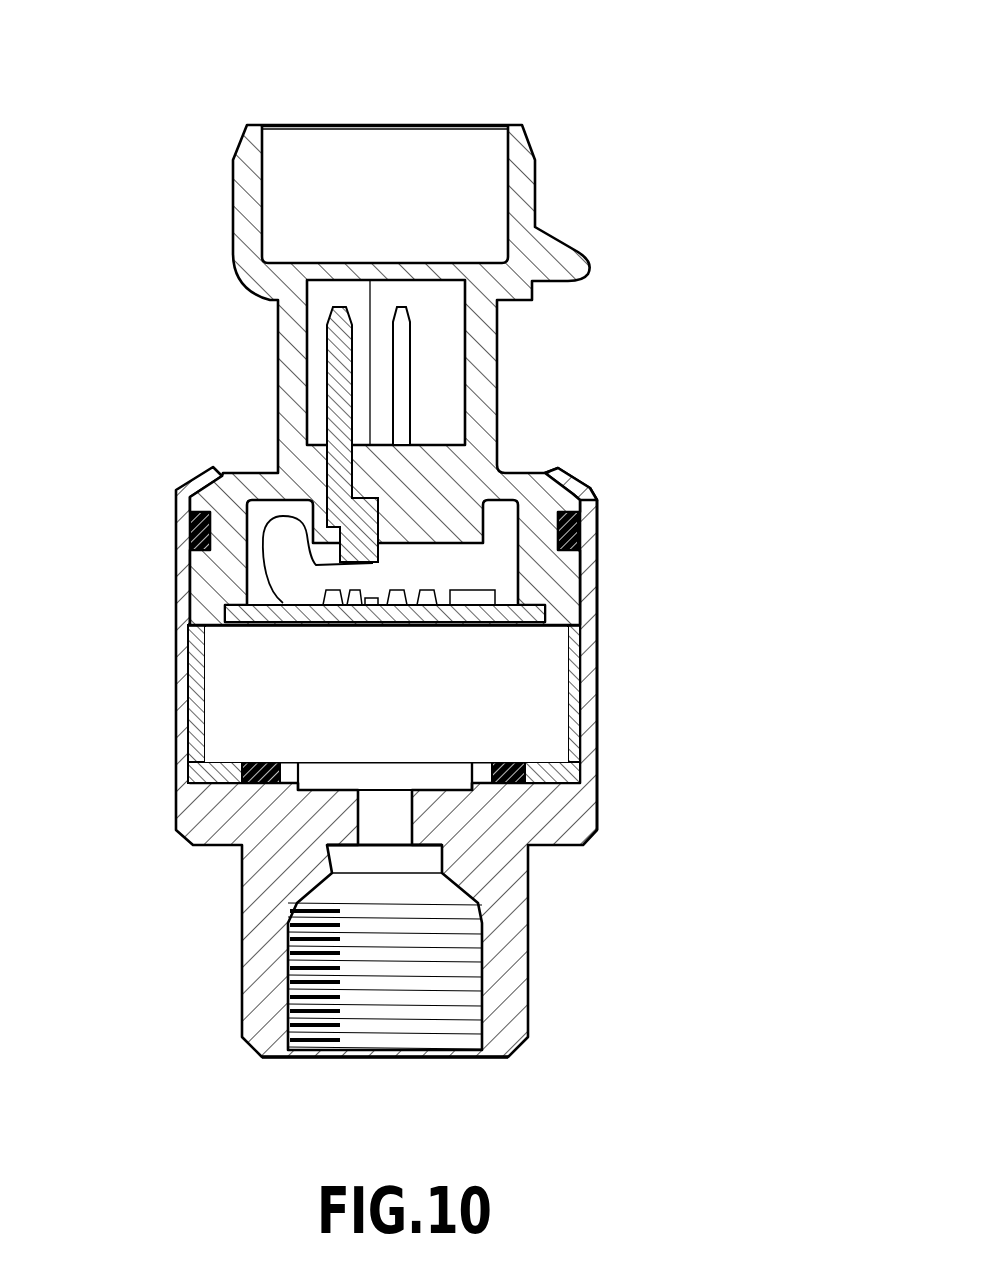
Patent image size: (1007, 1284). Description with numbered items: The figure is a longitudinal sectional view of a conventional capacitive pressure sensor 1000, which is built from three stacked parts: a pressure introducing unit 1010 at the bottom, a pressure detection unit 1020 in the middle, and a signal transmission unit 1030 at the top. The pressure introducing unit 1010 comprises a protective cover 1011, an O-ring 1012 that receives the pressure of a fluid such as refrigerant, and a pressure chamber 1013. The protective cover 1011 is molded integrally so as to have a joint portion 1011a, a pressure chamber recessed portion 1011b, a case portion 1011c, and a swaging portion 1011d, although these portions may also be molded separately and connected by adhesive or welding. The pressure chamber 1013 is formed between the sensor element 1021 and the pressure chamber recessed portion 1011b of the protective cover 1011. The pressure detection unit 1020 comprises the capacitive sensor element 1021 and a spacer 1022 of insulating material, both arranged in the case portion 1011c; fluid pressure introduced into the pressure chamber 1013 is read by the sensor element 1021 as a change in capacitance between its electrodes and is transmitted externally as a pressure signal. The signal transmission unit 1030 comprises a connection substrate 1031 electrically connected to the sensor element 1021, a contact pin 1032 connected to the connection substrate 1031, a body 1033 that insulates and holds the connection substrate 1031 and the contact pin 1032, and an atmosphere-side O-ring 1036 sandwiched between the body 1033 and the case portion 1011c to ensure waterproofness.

The capacitive pressure sensor 1000 is at (626, 91).
The pressure introducing unit 1010 is at (222, 953).
The protective cover 1011 is at (525, 888).
The joint portion 1011a is at (528, 978).
The pressure chamber recessed portion 1011b is at (472, 770).
The case portion 1011c is at (597, 546).
The swaging portion 1011d is at (573, 483).
The O-ring 1012 is at (507, 775).
The pressure chamber 1013 is at (350, 772).
The pressure detection unit 1020 is at (162, 674).
The sensor element 1021 is at (512, 712).
The spacer 1022 is at (575, 668).
The signal transmission unit 1030 is at (163, 517).
The connection substrate 1031 is at (510, 608).
The contact pin 1032 is at (402, 362).
The body 1033 is at (487, 402).
The atmosphere-side O-ring 1036 is at (578, 528).